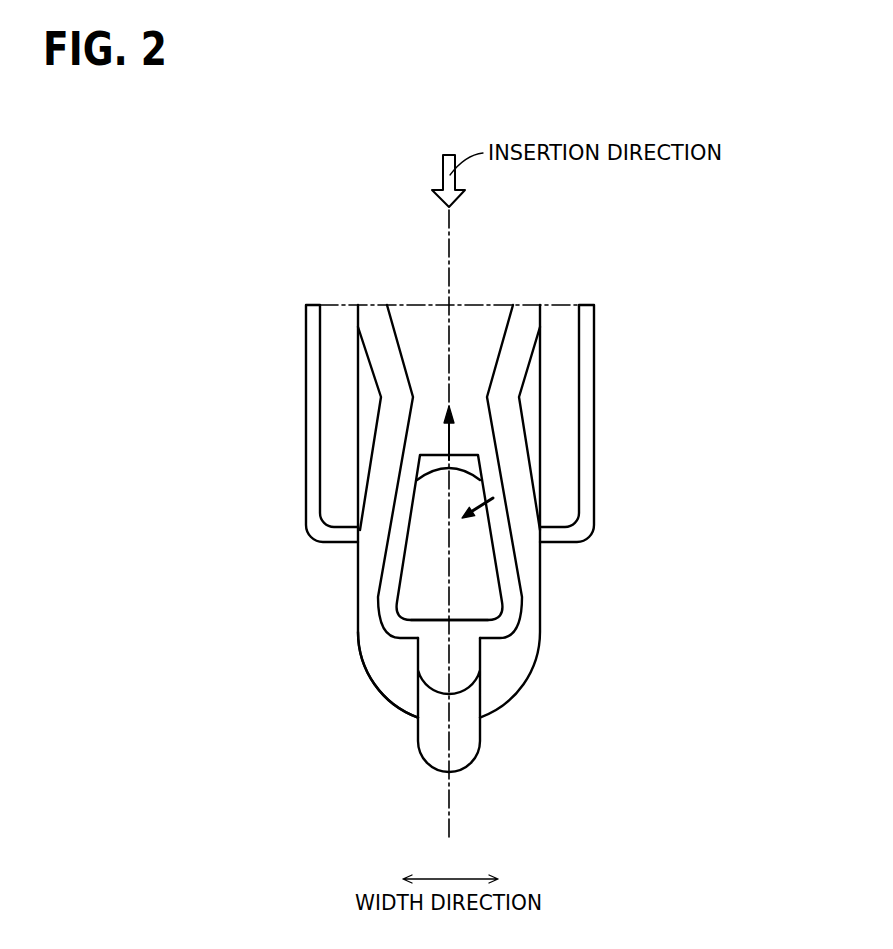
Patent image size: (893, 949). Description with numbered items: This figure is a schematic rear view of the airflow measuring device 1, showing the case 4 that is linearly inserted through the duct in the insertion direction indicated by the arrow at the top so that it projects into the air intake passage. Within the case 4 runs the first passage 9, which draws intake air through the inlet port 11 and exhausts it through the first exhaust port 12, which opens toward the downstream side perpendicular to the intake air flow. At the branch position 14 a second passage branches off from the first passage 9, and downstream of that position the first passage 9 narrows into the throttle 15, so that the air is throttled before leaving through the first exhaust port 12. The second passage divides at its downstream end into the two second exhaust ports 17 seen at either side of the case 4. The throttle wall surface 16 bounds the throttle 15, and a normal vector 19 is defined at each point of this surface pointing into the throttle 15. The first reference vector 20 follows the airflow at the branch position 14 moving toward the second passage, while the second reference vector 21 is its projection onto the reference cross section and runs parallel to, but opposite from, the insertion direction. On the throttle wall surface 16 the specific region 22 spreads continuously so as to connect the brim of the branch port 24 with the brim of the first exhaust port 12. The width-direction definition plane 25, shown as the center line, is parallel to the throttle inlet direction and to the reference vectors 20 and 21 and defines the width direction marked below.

The airflow measuring device 1 is at (673, 236).
The case 4 is at (262, 280).
The first passage 9 is at (388, 675).
The inlet port 11 is at (475, 610).
The first exhaust port 12 is at (477, 593).
The branch position 14 is at (443, 466).
The throttle 15 is at (334, 662).
The throttle wall surface 16 is at (495, 572).
The second exhaust ports 17 is at (570, 362).
The normal vector 19 is at (482, 485).
The first reference vector 20 is at (328, 433).
The second reference vector 21 is at (446, 416).
The specific region 22 is at (573, 471).
The branch port 24 is at (472, 463).
The width-direction definition plane 25 is at (452, 250).